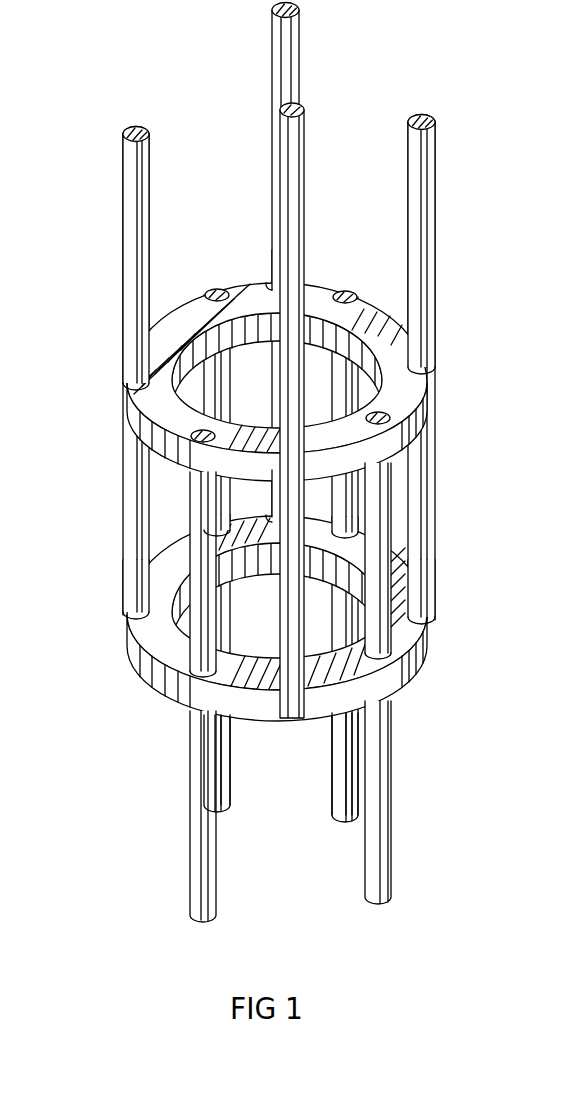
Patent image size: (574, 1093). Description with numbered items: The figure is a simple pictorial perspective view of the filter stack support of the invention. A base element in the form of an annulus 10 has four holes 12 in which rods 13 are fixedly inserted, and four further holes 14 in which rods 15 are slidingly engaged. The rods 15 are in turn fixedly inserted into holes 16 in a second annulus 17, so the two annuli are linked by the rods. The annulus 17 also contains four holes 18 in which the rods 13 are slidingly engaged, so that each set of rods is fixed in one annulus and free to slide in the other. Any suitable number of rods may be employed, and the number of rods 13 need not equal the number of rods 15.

The annulus 10 is at (145, 398).
The holes 12 is at (208, 290).
The rods 13 is at (189, 792).
The holes 14 is at (135, 386).
The rods 15 is at (272, 35).
The holes 16 is at (128, 612).
The annulus 17 is at (130, 660).
The holes 18 is at (357, 537).